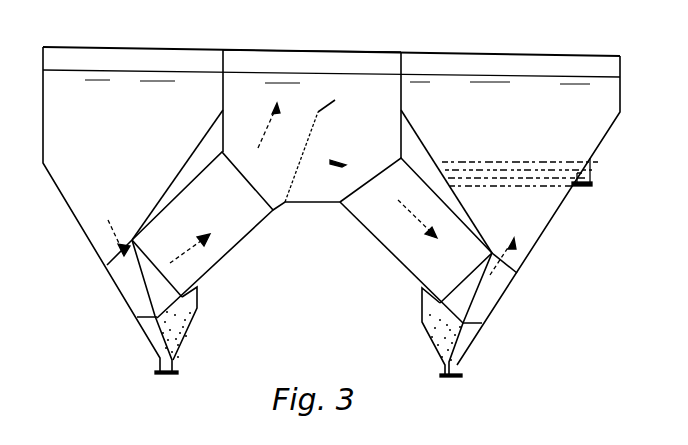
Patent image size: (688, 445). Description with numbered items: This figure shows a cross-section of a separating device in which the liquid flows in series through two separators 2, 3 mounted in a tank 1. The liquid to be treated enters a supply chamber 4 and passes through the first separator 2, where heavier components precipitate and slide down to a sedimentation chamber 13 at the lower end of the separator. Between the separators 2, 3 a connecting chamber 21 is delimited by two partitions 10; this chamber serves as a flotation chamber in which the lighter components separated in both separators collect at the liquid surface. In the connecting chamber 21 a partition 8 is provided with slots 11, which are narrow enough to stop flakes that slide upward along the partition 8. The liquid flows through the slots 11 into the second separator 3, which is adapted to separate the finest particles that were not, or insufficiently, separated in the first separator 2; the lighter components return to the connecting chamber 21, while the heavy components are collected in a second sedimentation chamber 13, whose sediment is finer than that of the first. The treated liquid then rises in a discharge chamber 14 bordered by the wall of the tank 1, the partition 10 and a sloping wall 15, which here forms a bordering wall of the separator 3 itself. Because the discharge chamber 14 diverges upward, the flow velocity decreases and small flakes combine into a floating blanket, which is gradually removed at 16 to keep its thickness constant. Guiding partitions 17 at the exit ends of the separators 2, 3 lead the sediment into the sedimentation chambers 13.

The tank 1 is at (58, 205).
The first separator 2 is at (230, 216).
The second separator 3 is at (419, 251).
The supply chamber 4 is at (112, 117).
The partition 8 is at (334, 103).
The partition 10 is at (226, 50).
The slots 11 is at (315, 153).
The sedimentation chamber 13 is at (180, 328).
The discharge chamber 14 is at (571, 122).
The sloping wall 15 is at (181, 165).
The blanket removal point 16 is at (590, 183).
The guiding partitions 17 is at (133, 287).
The connecting chamber 21 is at (327, 60).